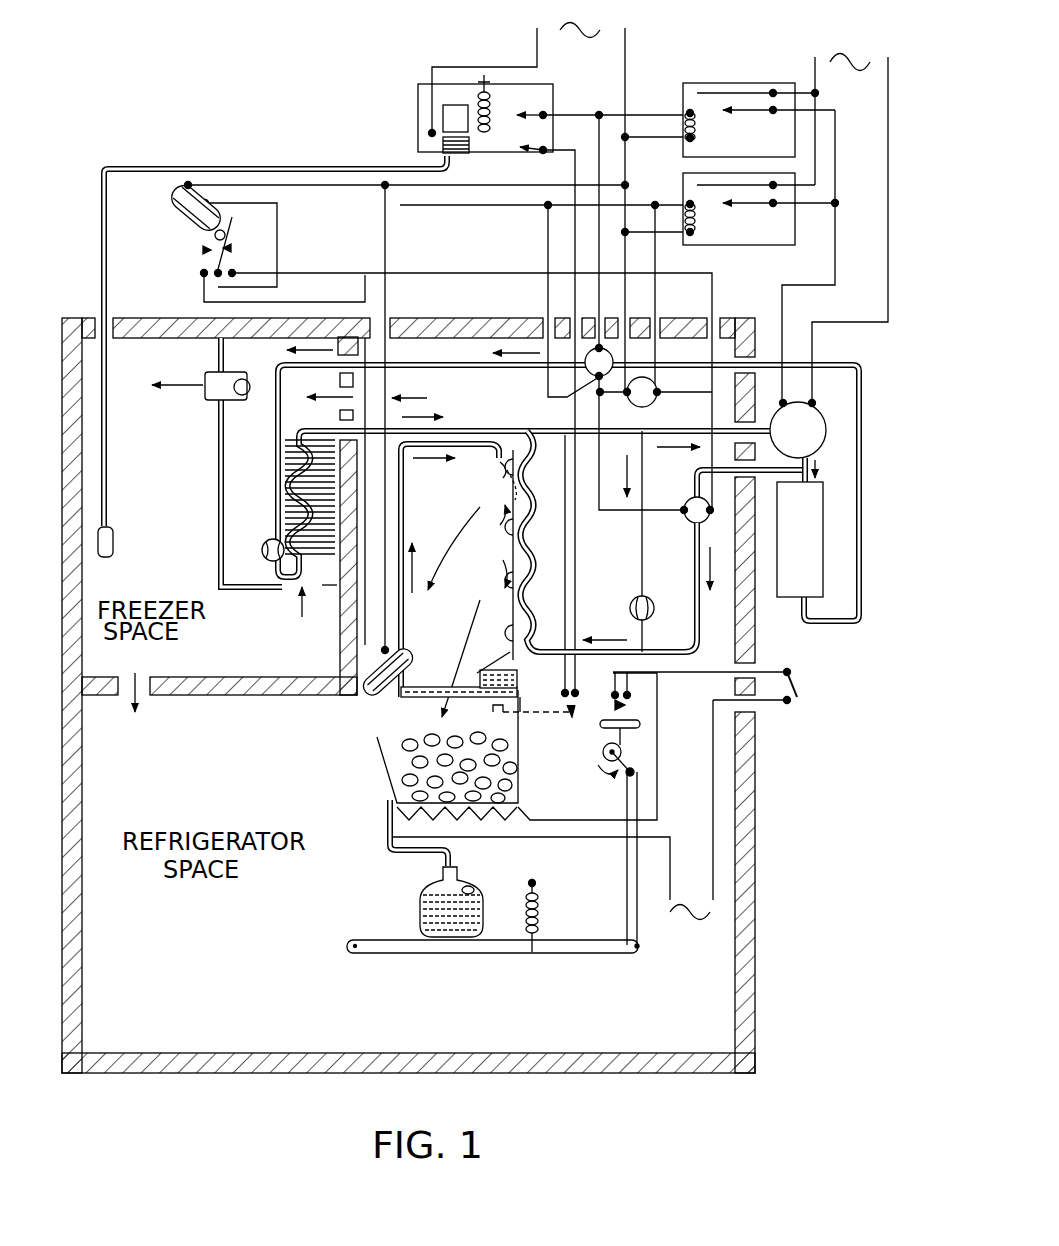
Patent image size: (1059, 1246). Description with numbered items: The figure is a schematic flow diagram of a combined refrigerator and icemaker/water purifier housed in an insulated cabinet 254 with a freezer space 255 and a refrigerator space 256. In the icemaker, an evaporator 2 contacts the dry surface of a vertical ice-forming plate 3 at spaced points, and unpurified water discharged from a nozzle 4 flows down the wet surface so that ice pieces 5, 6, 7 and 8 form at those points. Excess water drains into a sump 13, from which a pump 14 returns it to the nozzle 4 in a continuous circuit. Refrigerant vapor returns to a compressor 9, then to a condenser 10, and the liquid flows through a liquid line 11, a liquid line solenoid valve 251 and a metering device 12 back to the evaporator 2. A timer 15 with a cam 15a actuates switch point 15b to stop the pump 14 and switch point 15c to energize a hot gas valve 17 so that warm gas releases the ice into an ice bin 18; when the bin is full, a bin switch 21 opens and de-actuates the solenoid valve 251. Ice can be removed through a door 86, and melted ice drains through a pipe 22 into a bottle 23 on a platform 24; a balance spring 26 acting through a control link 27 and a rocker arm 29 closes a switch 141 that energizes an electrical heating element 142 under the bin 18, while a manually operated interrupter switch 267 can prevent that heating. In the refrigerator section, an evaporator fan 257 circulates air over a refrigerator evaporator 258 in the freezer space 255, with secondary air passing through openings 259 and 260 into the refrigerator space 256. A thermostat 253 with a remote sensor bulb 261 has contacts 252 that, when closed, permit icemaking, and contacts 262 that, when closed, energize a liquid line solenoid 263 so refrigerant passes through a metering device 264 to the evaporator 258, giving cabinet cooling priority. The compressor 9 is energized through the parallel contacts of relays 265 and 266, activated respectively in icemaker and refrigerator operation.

The evaporator 2 is at (540, 552).
The vertical ice-forming plate 3 is at (520, 497).
The nozzle 4 is at (498, 452).
The ice piece 5 is at (503, 473).
The ice piece 6 is at (500, 530).
The ice piece 7 is at (497, 573).
The ice piece 8 is at (498, 632).
The compressor 9 is at (827, 430).
The condenser 10 is at (823, 558).
The liquid line 11 is at (860, 372).
The metering device 12 is at (630, 605).
The sump 13 is at (520, 677).
The pump 14 is at (375, 690).
The timer 15 is at (240, 236).
The cam 15a is at (210, 237).
The switch point 15b is at (200, 258).
The switch point 15c is at (237, 248).
The hot gas valve 17 is at (687, 524).
The ice bin 18 is at (522, 777).
The bin switch 21 is at (560, 718).
The pipe 22 is at (380, 853).
The bottle 23 is at (420, 895).
The platform 24 is at (413, 953).
The balance spring 26 is at (542, 912).
The control link 27 is at (623, 860).
The rocker arm 29 is at (627, 748).
The door 86 is at (380, 750).
The switch 141 is at (645, 703).
The electrical heating element 142 is at (483, 812).
The liquid line solenoid valve 251 is at (652, 396).
The contacts 252 is at (500, 155).
The thermostat 253 is at (418, 100).
The insulated cabinet 254 is at (755, 980).
The freezer space 255 is at (227, 653).
The refrigerator space 256 is at (233, 1000).
The evaporator fan 257 is at (207, 397).
The refrigerator evaporator 258 is at (290, 490).
The opening 259 is at (358, 392).
The opening 260 is at (147, 697).
The remote sensor bulb 261 is at (116, 540).
The contacts 262 is at (507, 112).
The liquid line solenoid 263 is at (583, 378).
The metering device 264 is at (262, 563).
The relay 265 is at (762, 246).
The relay 266 is at (762, 83).
The interrupter switch 267 is at (790, 708).